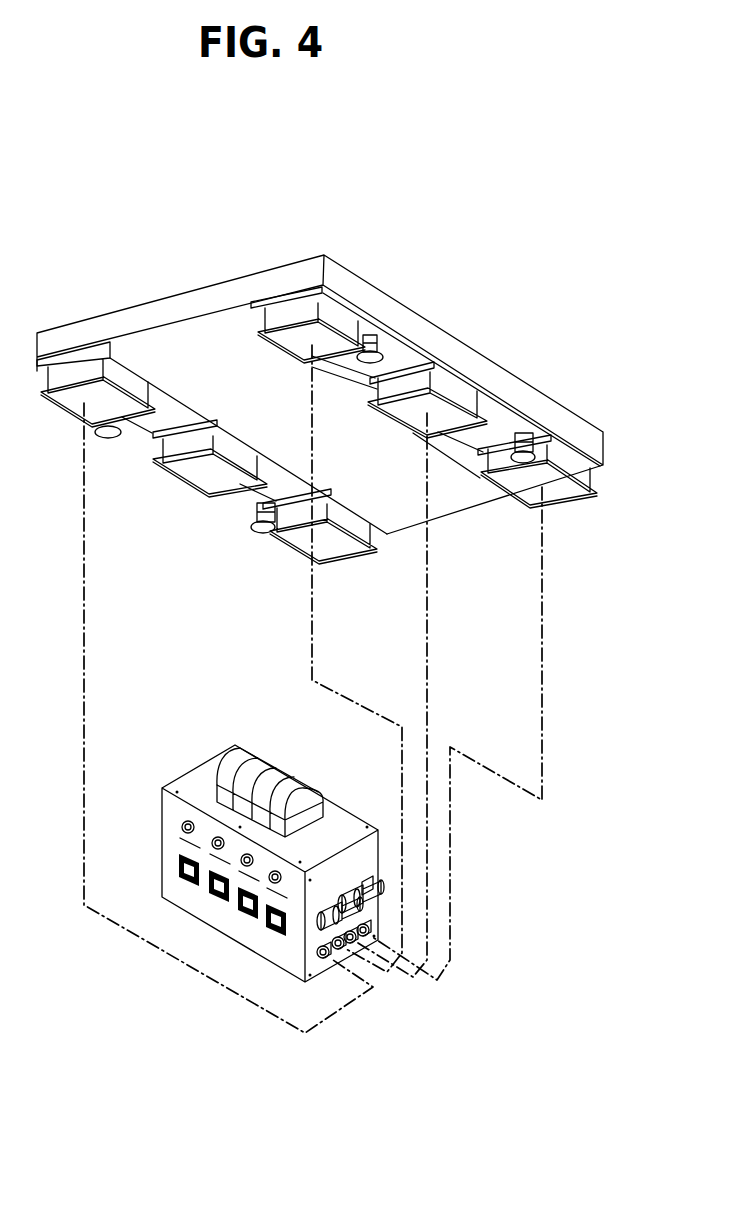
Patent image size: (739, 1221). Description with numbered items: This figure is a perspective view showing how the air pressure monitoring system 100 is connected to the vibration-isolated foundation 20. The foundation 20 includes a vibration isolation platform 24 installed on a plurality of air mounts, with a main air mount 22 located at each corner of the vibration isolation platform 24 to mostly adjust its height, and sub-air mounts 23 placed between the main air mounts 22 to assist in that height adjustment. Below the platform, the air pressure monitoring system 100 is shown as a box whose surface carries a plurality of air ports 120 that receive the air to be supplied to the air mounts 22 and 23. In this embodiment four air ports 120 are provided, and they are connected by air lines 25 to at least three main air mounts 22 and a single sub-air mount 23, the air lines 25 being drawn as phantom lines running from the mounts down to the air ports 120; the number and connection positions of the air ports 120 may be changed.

The vibration-isolated foundation 20 is at (255, 142).
The main air mount 22 is at (337, 340).
The sub-air mount 23 is at (410, 378).
The vibration isolation platform 24 is at (183, 296).
The air line 25 is at (542, 643).
The air pressure monitoring system 100 is at (191, 759).
The air port 120 is at (369, 930).